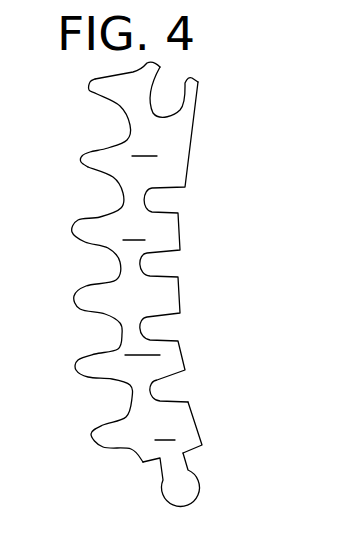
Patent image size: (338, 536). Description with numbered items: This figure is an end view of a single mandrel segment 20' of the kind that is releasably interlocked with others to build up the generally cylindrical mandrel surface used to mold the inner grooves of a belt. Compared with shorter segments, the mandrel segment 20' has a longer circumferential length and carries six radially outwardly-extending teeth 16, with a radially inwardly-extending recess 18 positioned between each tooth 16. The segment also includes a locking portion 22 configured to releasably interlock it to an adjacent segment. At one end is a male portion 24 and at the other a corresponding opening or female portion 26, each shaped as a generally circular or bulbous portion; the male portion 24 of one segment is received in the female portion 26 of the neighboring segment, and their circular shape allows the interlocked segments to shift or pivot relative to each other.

The teeth 16 is at (95, 85).
The recesses 18 is at (130, 128).
The female portion 26 is at (167, 107).
The mandrel segment 20' is at (158, 284).
The locking portion 22 is at (208, 433).
The male portion 24 is at (187, 487).